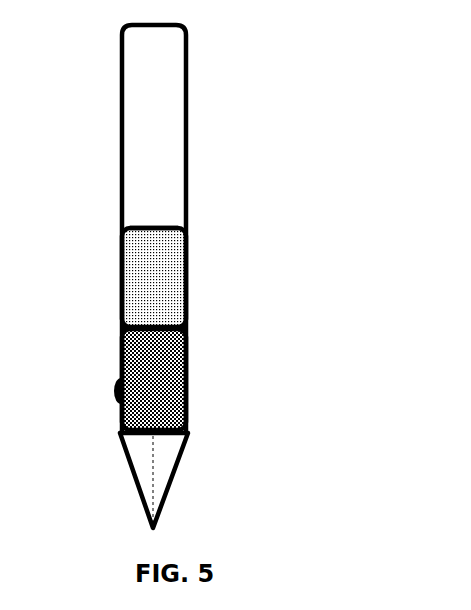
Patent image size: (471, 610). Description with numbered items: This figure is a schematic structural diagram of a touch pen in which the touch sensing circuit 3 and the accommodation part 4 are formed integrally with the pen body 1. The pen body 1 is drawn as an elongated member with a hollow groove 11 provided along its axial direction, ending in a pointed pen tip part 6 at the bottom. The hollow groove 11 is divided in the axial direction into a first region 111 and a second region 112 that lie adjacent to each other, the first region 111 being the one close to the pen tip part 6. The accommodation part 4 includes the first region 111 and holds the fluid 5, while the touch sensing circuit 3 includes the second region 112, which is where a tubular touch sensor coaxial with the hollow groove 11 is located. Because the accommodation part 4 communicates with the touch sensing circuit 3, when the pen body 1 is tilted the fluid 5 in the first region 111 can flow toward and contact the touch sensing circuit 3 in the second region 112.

The pen body 1 is at (190, 160).
The hollow groove 11 is at (211, 329).
The first region 111 is at (188, 379).
The second region 112 is at (195, 228).
The touch sensing circuit 3 is at (146, 226).
The accommodation part 4 is at (120, 350).
The fluid 5 is at (118, 367).
The pen tip part 6 is at (133, 473).